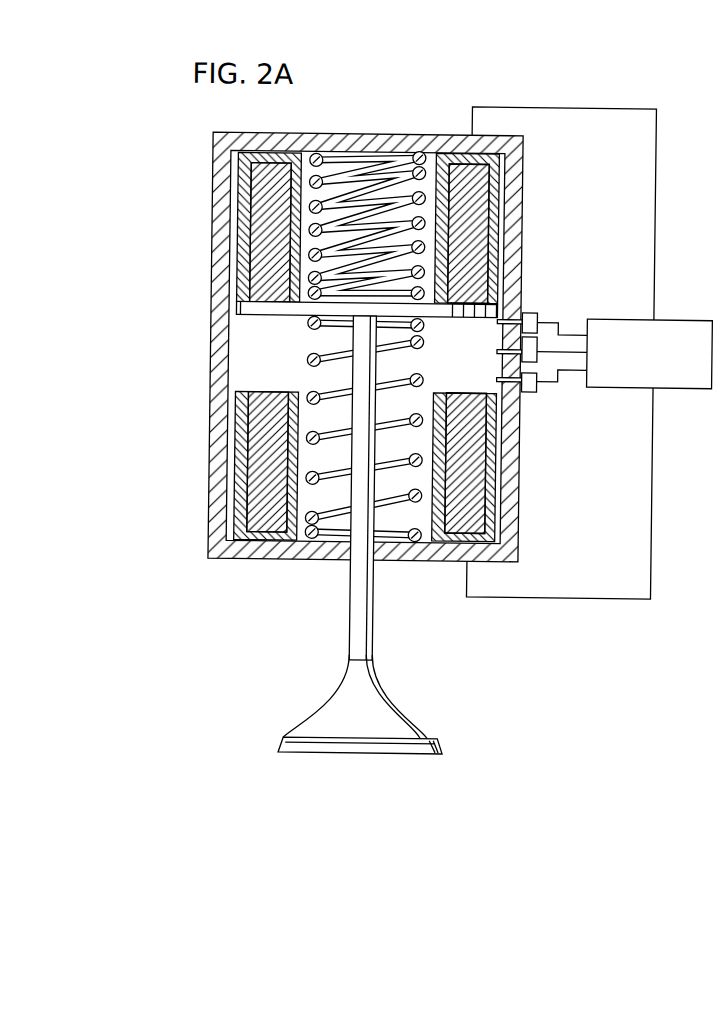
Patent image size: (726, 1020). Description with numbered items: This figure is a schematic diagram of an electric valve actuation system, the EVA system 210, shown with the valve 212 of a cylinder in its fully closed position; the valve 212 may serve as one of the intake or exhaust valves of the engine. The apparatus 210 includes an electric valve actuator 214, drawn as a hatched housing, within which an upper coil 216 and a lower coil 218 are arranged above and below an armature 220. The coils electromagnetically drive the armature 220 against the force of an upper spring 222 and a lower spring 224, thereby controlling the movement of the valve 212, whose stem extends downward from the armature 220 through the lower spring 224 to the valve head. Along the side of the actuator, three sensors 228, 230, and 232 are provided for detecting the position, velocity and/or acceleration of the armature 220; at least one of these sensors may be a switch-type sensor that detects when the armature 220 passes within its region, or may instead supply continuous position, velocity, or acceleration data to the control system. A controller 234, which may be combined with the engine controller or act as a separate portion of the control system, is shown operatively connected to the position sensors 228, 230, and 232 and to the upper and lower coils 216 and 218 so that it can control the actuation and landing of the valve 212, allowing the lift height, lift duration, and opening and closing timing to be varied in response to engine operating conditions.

The EVA system 210 is at (512, 97).
The valve 212 is at (411, 722).
The electric valve actuator 214 is at (213, 357).
The upper coil 216 is at (255, 231).
The lower coil 218 is at (251, 469).
The armature 220 is at (244, 311).
The upper spring 222 is at (367, 155).
The lower spring 224 is at (395, 503).
The sensor 228 is at (540, 346).
The sensor 230 is at (528, 391).
The sensor 232 is at (528, 311).
The controller 234 is at (688, 384).